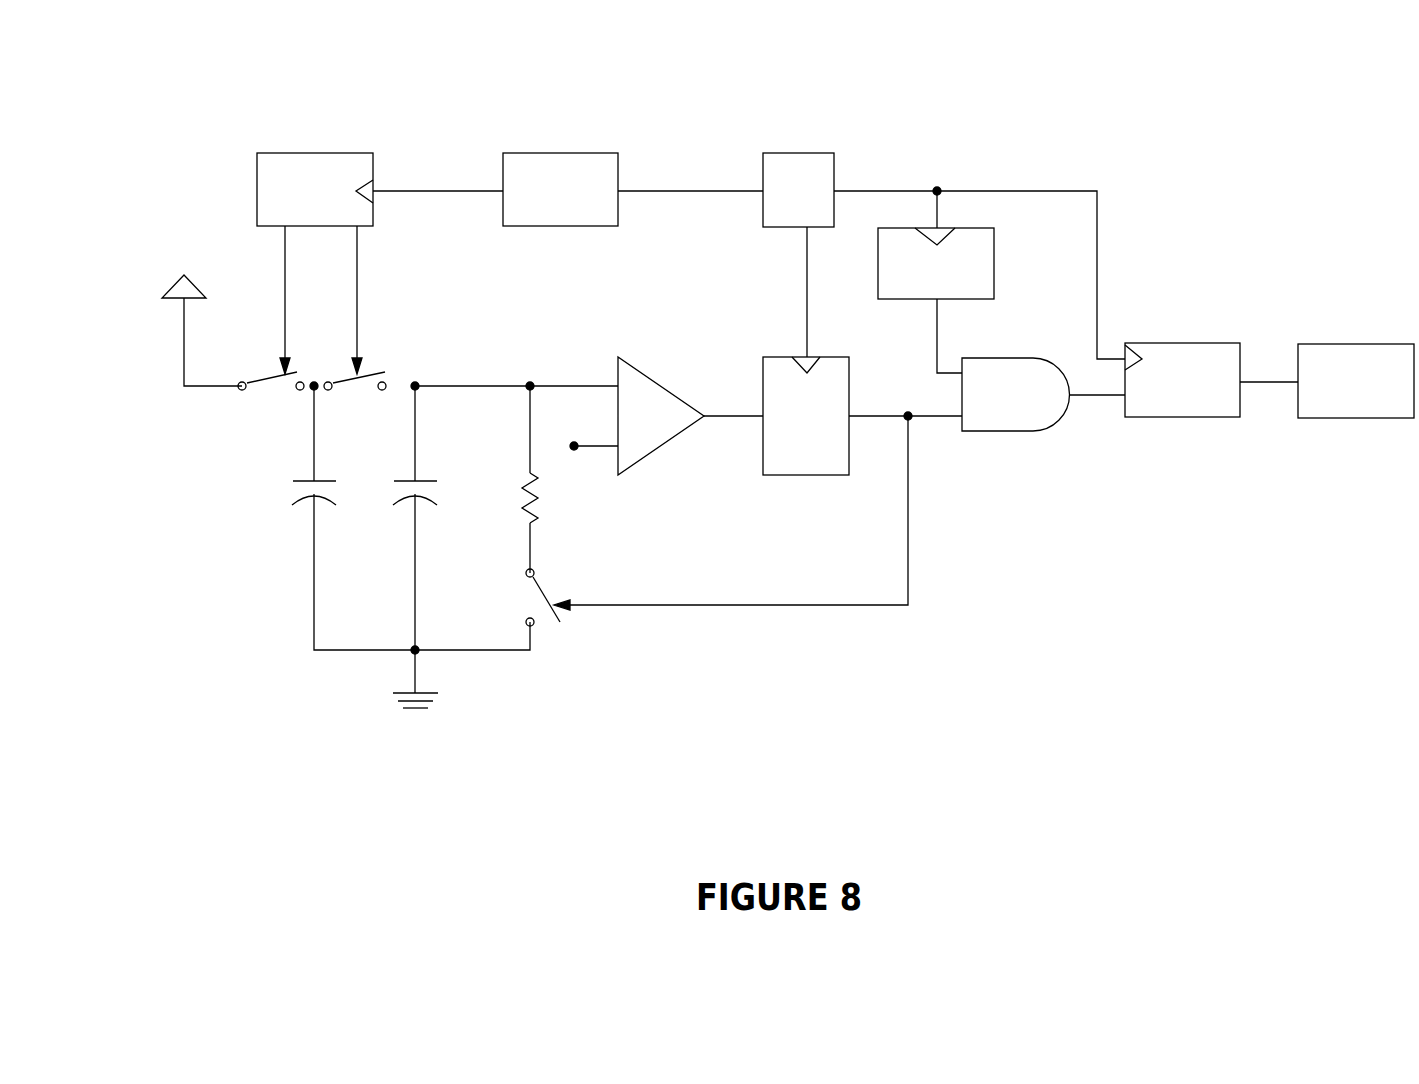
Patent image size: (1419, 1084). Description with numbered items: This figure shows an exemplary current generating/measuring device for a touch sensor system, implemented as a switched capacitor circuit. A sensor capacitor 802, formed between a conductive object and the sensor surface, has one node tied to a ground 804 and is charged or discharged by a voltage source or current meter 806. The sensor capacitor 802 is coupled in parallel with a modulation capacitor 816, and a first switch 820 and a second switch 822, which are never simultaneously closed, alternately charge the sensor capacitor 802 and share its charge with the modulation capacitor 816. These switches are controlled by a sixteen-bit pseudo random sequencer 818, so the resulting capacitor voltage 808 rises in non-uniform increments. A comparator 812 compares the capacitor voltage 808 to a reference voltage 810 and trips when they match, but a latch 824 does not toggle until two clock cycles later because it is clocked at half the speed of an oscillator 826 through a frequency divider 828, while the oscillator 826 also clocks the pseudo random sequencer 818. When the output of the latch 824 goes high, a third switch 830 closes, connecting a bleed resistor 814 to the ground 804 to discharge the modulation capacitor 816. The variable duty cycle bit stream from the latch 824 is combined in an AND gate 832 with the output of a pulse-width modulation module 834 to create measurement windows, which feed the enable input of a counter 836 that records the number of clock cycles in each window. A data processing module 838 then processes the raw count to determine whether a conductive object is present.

The sensor capacitor 802 is at (318, 493).
The ground 804 is at (418, 685).
The voltage source or current meter 806 is at (167, 290).
The capacitor voltage 808 is at (527, 382).
The reference voltage 810 is at (577, 450).
The comparator 812 is at (660, 382).
The bleed resistor 814 is at (542, 503).
The modulation capacitor 816 is at (421, 495).
The pseudo random sequencer 818 is at (308, 153).
The first switch 820 is at (263, 388).
The second switch 822 is at (349, 385).
The latch 824 is at (805, 475).
The oscillator 826 is at (560, 153).
The frequency divider 828 is at (793, 153).
The third switch 830 is at (545, 589).
The AND gate 832 is at (1015, 431).
The pulse-width modulation module 834 is at (994, 263).
The counter 836 is at (1180, 417).
The data processing module 838 is at (1353, 418).